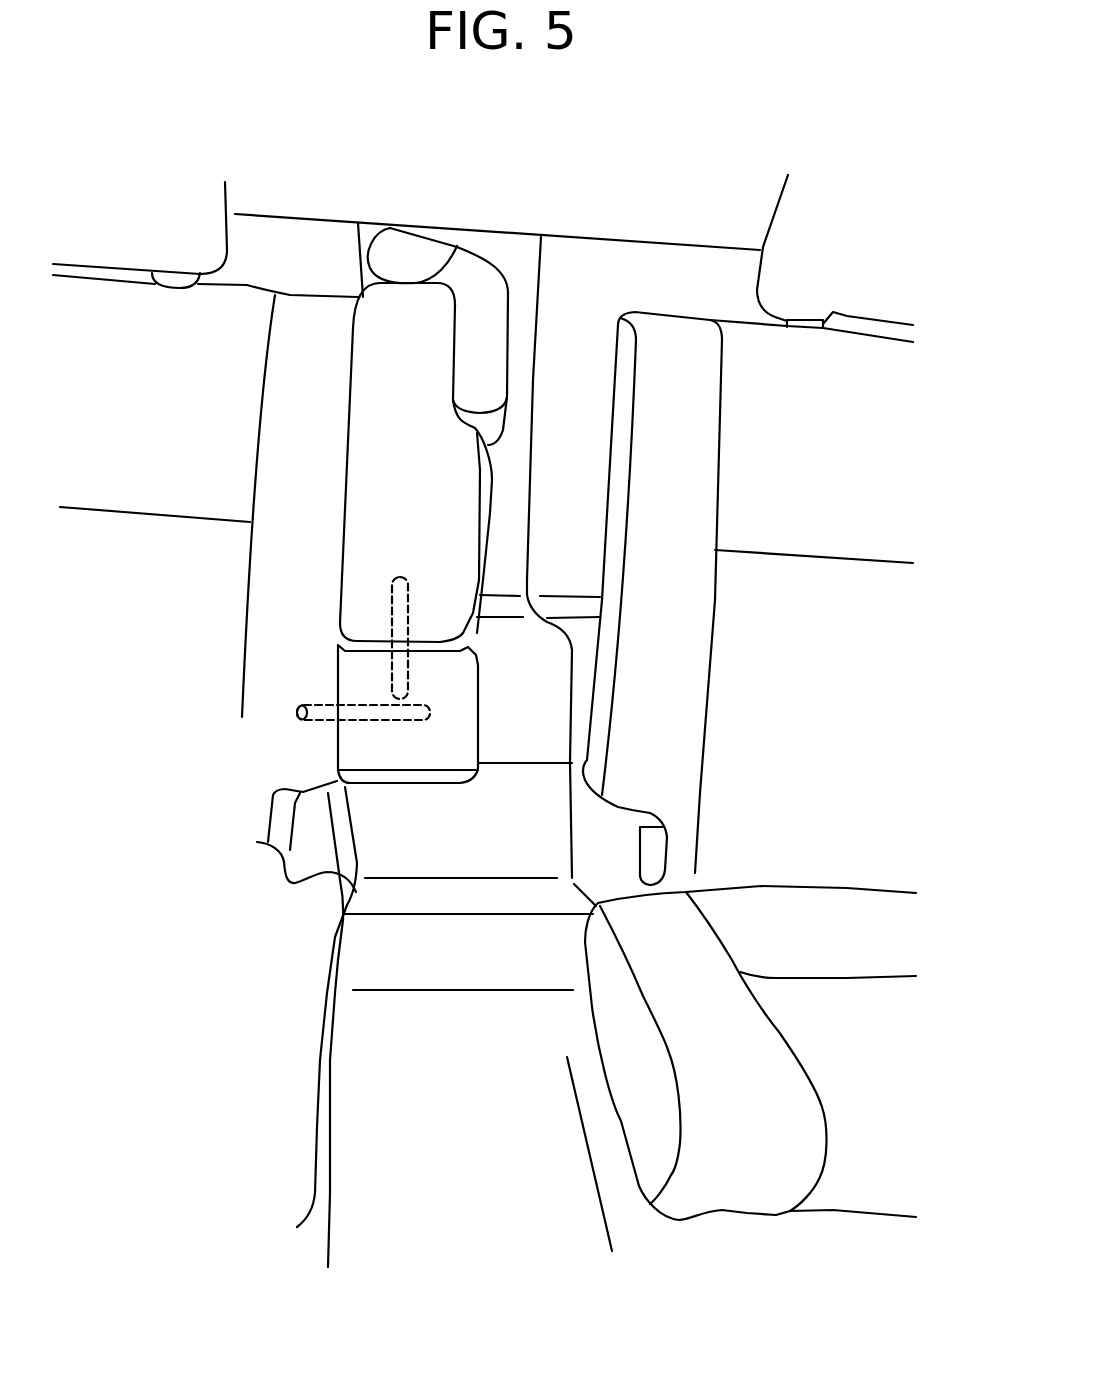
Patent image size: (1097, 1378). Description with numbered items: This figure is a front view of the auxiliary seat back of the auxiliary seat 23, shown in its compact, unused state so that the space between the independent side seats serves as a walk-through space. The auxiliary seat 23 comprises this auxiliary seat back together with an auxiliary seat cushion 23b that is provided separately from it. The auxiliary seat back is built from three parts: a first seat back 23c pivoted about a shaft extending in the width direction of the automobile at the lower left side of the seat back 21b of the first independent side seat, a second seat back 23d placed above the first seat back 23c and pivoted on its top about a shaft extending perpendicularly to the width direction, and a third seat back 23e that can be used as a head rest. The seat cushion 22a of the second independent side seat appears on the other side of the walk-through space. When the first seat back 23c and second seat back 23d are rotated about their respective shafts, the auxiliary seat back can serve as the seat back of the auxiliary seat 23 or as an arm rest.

The seat back 21b is at (127, 308).
The seat cushion 22a is at (743, 1147).
The auxiliary seat 23 is at (518, 251).
The auxiliary seat cushion 23b is at (750, 357).
The first seat back 23c is at (433, 777).
The second seat back 23d is at (420, 318).
The third seat back 23e is at (382, 243).